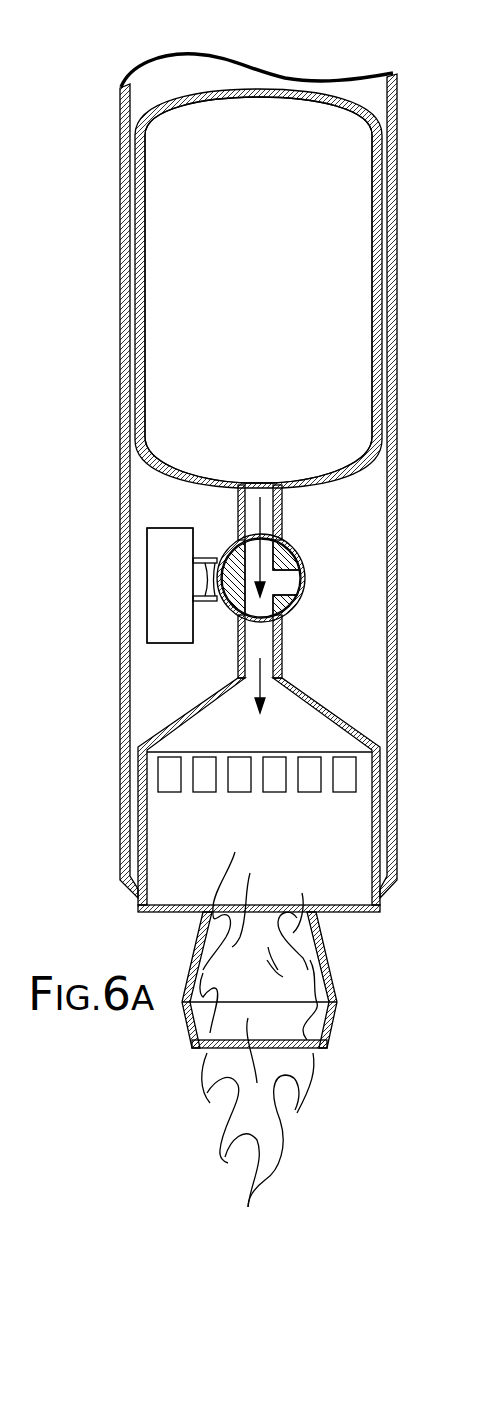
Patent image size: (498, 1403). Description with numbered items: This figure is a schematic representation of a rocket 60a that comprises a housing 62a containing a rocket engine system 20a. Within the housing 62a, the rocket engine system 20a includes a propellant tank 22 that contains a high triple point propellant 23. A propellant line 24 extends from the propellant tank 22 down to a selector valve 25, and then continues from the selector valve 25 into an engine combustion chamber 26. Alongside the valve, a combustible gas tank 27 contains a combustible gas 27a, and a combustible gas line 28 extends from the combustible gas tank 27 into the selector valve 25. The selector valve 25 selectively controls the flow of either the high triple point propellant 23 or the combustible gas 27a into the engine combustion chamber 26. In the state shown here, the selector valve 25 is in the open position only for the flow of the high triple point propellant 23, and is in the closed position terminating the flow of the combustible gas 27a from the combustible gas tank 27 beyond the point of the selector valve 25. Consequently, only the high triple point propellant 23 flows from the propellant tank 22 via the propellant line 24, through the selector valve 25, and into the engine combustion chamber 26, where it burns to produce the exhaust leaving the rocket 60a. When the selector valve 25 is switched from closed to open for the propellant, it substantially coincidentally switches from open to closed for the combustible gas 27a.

The rocket 60a is at (90, 415).
The housing 62a is at (397, 692).
The propellant tank 22 is at (385, 264).
The high triple point propellant 23 is at (310, 184).
The propellant line 24 is at (282, 532).
The rocket engine system 20a is at (313, 542).
The selector valve 25 is at (305, 580).
The engine combustion chamber 26 is at (368, 733).
The combustible gas tank 27 is at (153, 528).
The combustible gas 27a is at (167, 622).
The combustible gas line 28 is at (200, 605).